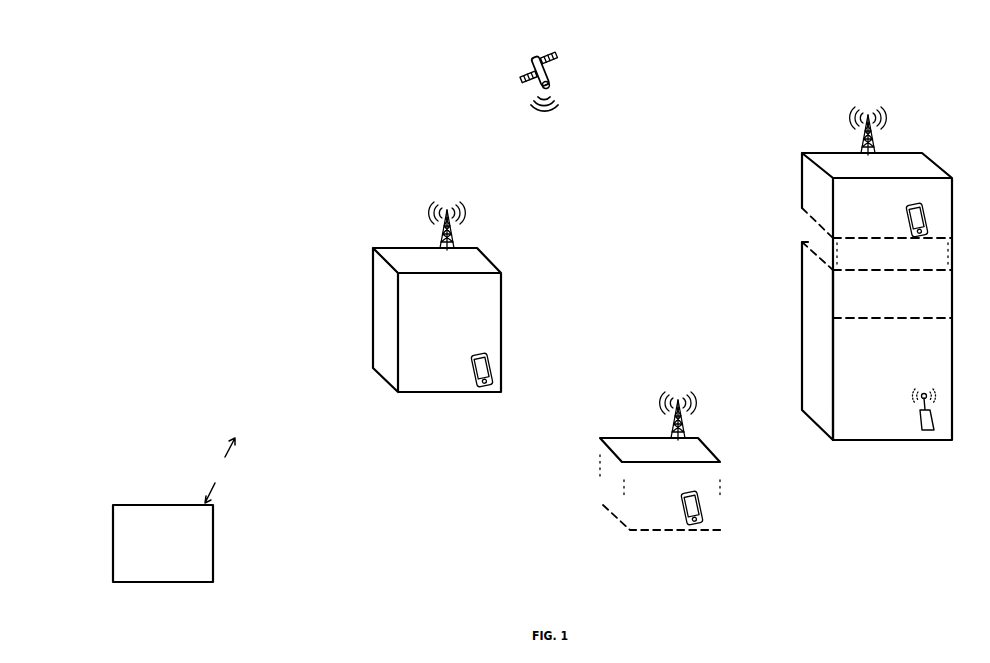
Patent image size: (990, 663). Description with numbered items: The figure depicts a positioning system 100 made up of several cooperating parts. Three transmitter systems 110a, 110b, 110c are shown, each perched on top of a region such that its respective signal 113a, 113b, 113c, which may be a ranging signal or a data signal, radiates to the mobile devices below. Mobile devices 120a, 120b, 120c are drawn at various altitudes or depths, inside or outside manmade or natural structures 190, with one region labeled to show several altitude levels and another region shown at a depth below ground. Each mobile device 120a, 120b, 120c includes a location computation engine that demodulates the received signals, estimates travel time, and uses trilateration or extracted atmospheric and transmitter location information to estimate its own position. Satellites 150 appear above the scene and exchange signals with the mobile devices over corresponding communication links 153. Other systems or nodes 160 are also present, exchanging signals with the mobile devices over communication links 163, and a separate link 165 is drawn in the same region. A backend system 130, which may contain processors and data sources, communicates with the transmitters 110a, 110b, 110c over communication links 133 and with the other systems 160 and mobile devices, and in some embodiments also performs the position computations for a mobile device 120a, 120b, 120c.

The positioning system 100 is at (124, 47).
The satellite systems 150 is at (553, 45).
The communication links 153 is at (560, 98).
The transmitter system 110a is at (440, 247).
The transmitter system 110b is at (670, 435).
The transmitter system 110c is at (877, 150).
The signal 113a is at (433, 206).
The signal 113b is at (657, 396).
The signal 113c is at (887, 116).
The mobile device 120a is at (471, 369).
The mobile device 120b is at (681, 510).
The mobile device 120c is at (907, 213).
The backend system 130 is at (173, 568).
The communication links 133 is at (441, 261).
The other systems 160 is at (922, 415).
The communication links 163 is at (915, 397).
The beacon distance / communication 165 is at (910, 430).
The structures 190 is at (371, 350).